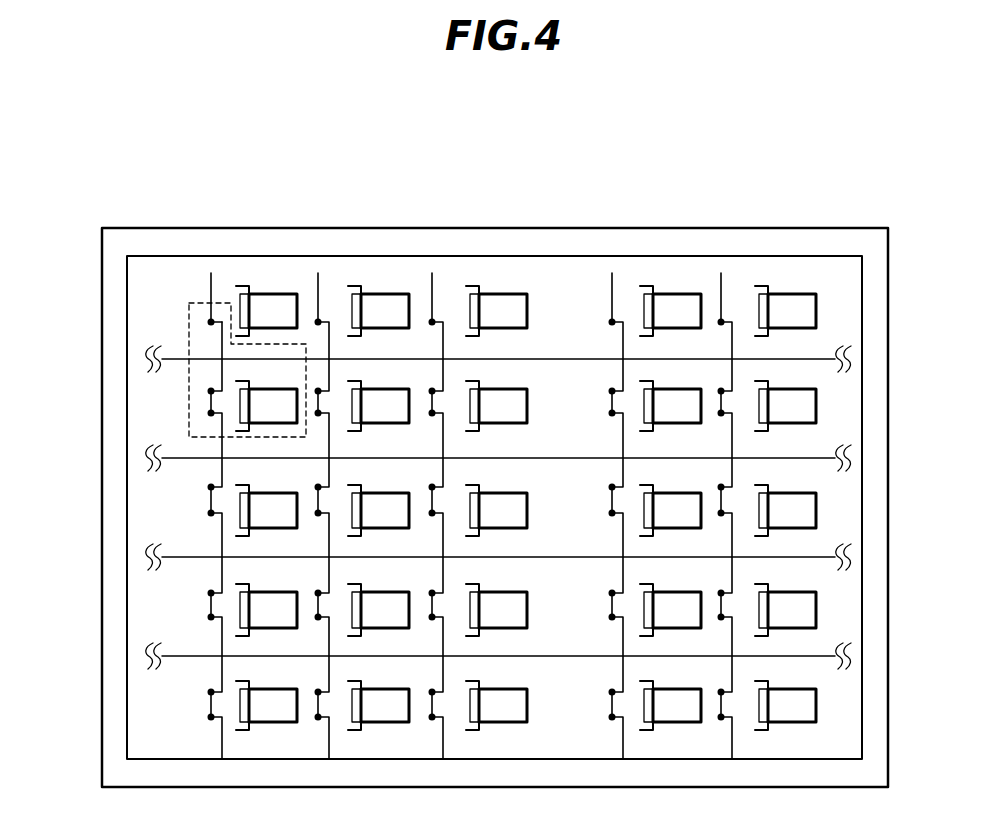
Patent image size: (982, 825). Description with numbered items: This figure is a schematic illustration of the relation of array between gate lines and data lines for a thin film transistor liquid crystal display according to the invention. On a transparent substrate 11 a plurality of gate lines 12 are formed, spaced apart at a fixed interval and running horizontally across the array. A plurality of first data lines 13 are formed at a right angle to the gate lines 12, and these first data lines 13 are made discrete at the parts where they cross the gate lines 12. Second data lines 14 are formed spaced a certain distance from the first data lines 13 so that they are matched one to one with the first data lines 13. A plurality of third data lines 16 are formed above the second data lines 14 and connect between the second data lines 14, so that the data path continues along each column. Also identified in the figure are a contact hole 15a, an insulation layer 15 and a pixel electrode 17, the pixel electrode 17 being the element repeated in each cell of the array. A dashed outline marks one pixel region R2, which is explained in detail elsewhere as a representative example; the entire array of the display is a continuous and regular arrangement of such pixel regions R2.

The transparent substrate 11 is at (853, 228).
The gate lines 12 is at (498, 357).
The first data lines 13 is at (250, 286).
The second data lines 14 is at (211, 285).
The insulation layer 15 is at (148, 256).
The contact hole 15a is at (211, 322).
The third data lines 16 is at (327, 320).
The pixel electrode 17 is at (270, 310).
The one pixel region R2 is at (202, 334).